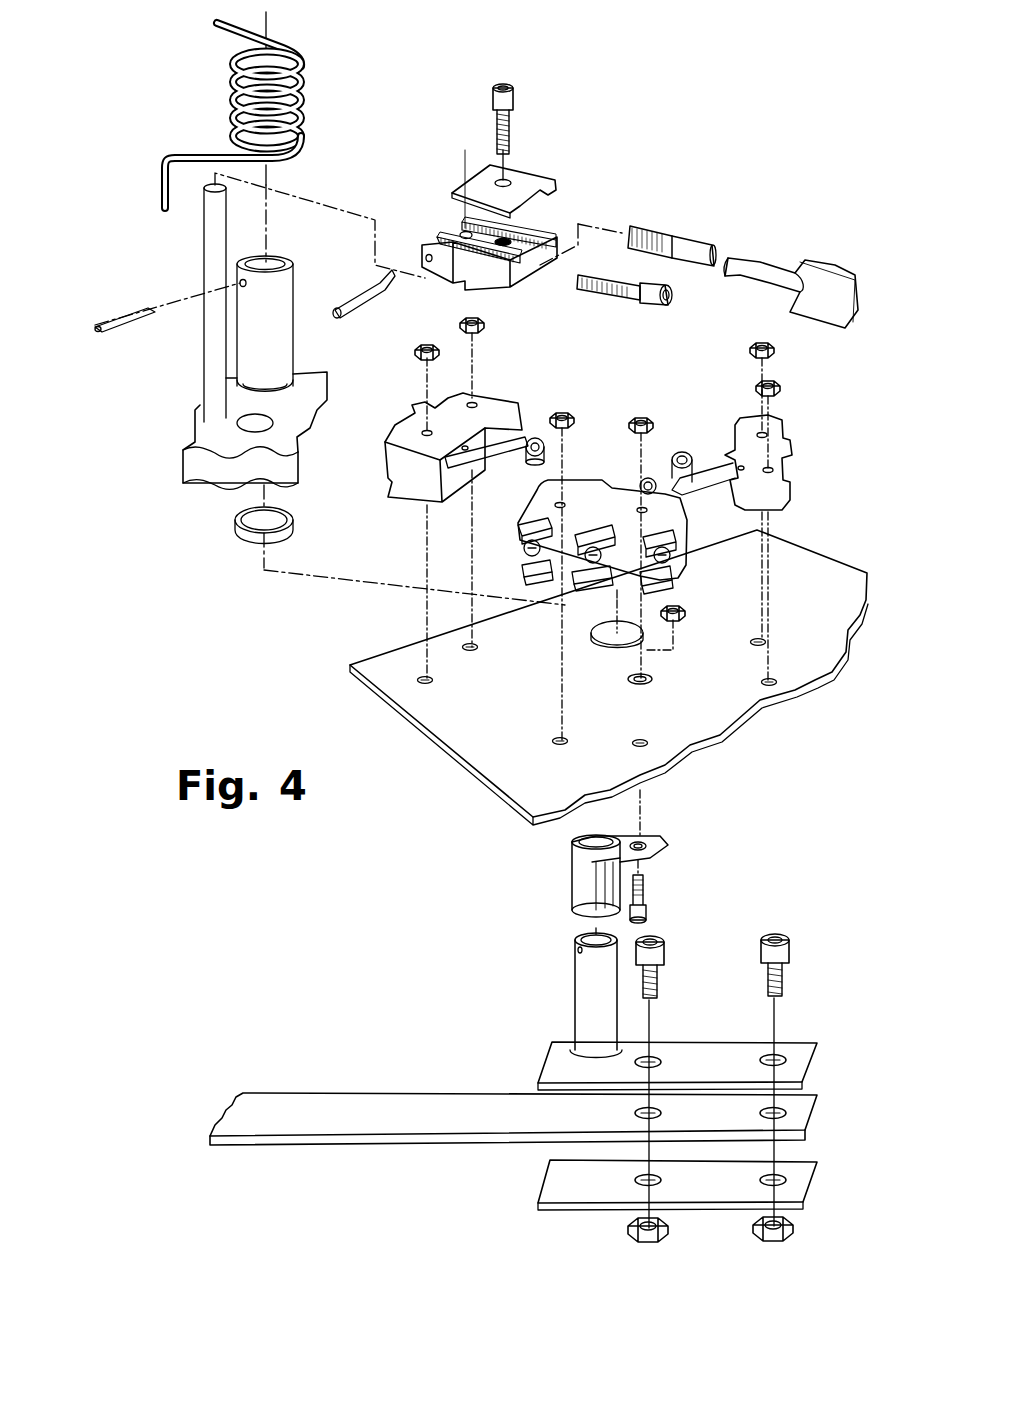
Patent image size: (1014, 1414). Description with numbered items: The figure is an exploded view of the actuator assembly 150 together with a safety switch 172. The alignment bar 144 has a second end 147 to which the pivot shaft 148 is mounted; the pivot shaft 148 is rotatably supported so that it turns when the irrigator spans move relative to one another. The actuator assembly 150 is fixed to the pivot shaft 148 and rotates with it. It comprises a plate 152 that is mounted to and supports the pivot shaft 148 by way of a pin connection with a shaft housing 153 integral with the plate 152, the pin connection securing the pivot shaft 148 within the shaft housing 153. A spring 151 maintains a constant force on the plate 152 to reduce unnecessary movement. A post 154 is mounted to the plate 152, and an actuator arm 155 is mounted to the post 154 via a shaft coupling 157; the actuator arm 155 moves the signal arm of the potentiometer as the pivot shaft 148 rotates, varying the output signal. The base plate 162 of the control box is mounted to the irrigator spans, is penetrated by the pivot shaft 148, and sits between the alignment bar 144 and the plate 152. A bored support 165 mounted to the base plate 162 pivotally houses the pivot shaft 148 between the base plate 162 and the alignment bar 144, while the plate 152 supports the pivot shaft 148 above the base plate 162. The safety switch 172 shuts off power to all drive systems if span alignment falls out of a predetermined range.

The actuator assembly 150 is at (212, 620).
The spring 151 is at (300, 100).
The plate 152 is at (300, 400).
The shaft housing 153 is at (280, 320).
The post 154 is at (200, 235).
The actuator arm 155 is at (752, 268).
The shaft coupling 157 is at (565, 175).
The base plate 162 is at (485, 785).
The bored support 165 is at (580, 882).
The safety switch 172 is at (410, 488).
The pivot shaft 148 is at (603, 955).
The second end 147 is at (540, 1110).
The alignment bar 144 is at (318, 1107).